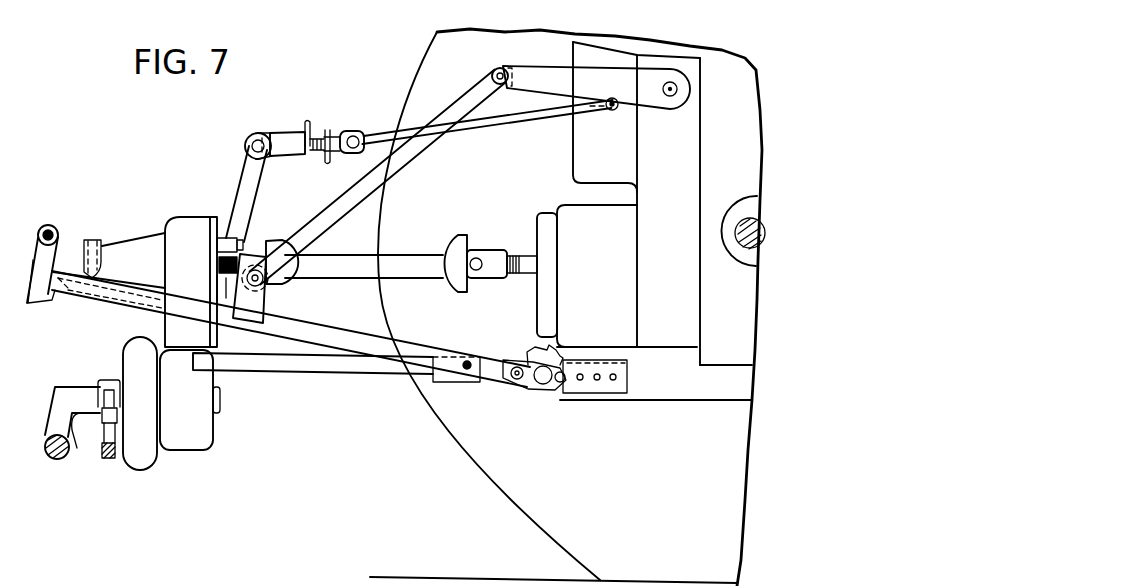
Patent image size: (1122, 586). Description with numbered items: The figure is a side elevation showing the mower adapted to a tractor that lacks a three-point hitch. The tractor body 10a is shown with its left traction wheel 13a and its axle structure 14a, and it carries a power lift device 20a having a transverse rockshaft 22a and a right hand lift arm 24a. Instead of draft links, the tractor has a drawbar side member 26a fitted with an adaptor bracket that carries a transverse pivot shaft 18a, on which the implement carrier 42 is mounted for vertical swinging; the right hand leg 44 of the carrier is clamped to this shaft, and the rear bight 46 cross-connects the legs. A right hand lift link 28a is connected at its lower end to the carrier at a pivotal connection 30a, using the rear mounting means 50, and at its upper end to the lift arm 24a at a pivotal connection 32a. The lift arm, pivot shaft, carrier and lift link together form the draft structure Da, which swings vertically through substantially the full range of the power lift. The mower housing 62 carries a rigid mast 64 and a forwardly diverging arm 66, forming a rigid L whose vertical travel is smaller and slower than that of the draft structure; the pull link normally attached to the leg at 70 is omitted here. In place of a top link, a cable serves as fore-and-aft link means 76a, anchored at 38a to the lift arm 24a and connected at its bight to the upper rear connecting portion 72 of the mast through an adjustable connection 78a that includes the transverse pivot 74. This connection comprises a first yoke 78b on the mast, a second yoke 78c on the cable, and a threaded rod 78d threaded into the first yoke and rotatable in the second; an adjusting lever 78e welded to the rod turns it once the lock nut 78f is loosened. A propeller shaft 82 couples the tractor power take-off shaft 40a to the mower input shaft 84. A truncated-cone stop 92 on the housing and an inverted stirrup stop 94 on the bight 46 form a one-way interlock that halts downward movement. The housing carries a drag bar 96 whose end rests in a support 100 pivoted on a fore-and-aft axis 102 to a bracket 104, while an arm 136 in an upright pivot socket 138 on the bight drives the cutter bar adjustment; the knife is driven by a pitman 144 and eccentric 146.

The tractor body 10a is at (745, 342).
The traction wheel 13a is at (538, 537).
The axle structure 14a is at (750, 204).
The transverse pivot shaft 18a is at (545, 385).
The power lift device 20a is at (700, 73).
The transverse rockshaft 22a is at (675, 90).
The right hand lift arm 24a is at (548, 78).
The right hand drawbar side member 26a is at (721, 395).
The right hand lift link 28a is at (411, 164).
The pivotal connection 30a is at (256, 265).
The pivotal connection 32a is at (494, 70).
The anchor 38a is at (611, 112).
The tractor power take-off shaft 40a is at (520, 260).
The carrier 42 is at (355, 327).
The right hand leg 44 is at (306, 330).
The rear bight 46 is at (60, 300).
The right hand rear mounting means 50 is at (248, 312).
The mower housing 62 is at (178, 206).
The mast 64 is at (240, 188).
The right hand arm 66 is at (320, 362).
The pull link connection point 70 is at (468, 370).
The upper rear connecting portion 72 is at (247, 143).
The transverse pivot 74 is at (247, 152).
The fore-and-aft link means 76a is at (515, 118).
The adjustable connection 78a is at (292, 130).
The first yoke 78b is at (272, 134).
The second yoke 78c is at (348, 133).
The threaded rod 78d is at (322, 135).
The adjusting lever 78e is at (327, 157).
The lock nut 78f is at (308, 120).
The power transmitting shaft 82 is at (353, 257).
The input shaft 84 is at (215, 265).
The stop element 92 is at (122, 247).
The stop element 94 is at (100, 237).
The drag bar 96 is at (55, 460).
The support 100 is at (73, 448).
The fore-and-aft pivot axis 102 is at (50, 388).
The bracket 104 is at (110, 380).
The arm 136 is at (48, 224).
The upright pivot socket 138 is at (38, 309).
The pitman 144 is at (109, 460).
The eccentric 146 is at (145, 462).
The draft structure Da is at (348, 185).